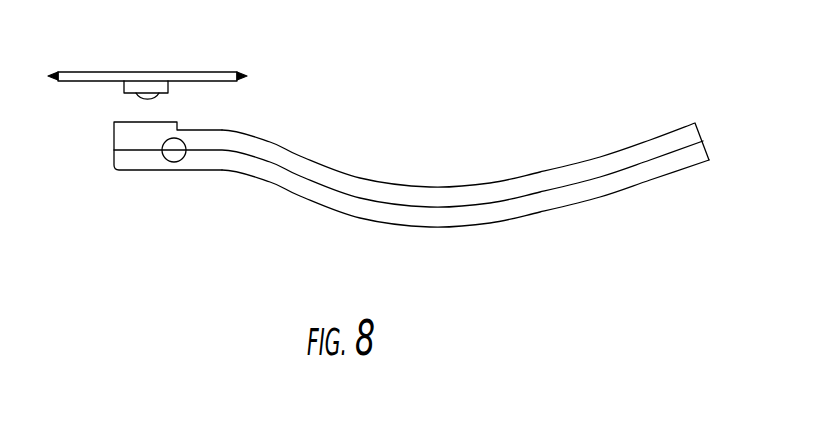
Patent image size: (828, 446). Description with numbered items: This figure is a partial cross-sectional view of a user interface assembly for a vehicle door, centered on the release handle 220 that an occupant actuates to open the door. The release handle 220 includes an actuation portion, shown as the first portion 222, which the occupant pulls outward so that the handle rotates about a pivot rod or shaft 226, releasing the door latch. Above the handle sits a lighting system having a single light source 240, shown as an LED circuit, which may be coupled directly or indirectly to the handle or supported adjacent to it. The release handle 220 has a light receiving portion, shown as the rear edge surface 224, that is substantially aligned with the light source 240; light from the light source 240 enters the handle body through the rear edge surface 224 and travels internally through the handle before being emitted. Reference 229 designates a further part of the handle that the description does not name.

The release handle 220 is at (418, 192).
The first portion 222 is at (446, 217).
The rear edge surface 224 is at (168, 121).
The pivot rod or shaft 226 is at (174, 161).
The middle rib of arm 229 is at (660, 158).
The light source 240 is at (148, 101).